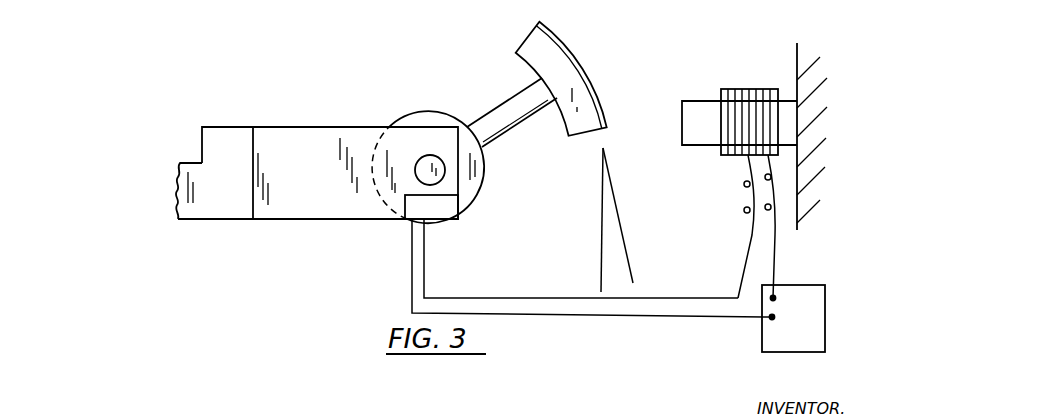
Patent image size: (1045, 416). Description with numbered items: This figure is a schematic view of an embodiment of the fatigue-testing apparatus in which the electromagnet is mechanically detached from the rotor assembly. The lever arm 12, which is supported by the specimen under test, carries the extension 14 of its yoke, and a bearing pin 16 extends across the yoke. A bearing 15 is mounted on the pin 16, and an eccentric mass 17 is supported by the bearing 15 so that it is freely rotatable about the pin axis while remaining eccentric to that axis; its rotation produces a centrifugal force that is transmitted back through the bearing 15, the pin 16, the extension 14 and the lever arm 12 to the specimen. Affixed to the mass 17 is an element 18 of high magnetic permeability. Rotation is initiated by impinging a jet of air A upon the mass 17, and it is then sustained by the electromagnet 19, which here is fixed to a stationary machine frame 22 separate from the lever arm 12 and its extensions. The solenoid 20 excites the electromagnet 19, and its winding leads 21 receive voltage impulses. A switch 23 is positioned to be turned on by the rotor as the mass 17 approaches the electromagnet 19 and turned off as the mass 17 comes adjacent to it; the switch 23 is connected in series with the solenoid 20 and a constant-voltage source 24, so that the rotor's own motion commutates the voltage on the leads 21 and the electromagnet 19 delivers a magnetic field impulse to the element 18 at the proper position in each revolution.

The lever arm 12 is at (213, 205).
The extension 14 is at (293, 207).
The bearing 15 is at (442, 223).
The bearing pin 16 is at (435, 160).
The switch 23 is at (443, 204).
The eccentric mass 17 is at (547, 52).
The magnetically permeable element 18 is at (578, 70).
The jet of air A is at (627, 267).
The electromagnet 19 is at (692, 140).
The solenoid 20 is at (742, 92).
The solenoid-winding-conductor leads 21 is at (773, 220).
The machine frame 22 is at (827, 95).
The constant-voltage source 24 is at (808, 290).